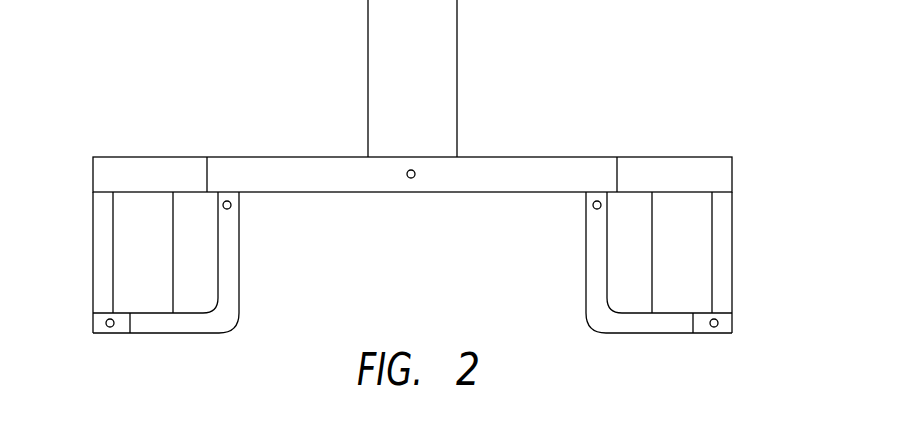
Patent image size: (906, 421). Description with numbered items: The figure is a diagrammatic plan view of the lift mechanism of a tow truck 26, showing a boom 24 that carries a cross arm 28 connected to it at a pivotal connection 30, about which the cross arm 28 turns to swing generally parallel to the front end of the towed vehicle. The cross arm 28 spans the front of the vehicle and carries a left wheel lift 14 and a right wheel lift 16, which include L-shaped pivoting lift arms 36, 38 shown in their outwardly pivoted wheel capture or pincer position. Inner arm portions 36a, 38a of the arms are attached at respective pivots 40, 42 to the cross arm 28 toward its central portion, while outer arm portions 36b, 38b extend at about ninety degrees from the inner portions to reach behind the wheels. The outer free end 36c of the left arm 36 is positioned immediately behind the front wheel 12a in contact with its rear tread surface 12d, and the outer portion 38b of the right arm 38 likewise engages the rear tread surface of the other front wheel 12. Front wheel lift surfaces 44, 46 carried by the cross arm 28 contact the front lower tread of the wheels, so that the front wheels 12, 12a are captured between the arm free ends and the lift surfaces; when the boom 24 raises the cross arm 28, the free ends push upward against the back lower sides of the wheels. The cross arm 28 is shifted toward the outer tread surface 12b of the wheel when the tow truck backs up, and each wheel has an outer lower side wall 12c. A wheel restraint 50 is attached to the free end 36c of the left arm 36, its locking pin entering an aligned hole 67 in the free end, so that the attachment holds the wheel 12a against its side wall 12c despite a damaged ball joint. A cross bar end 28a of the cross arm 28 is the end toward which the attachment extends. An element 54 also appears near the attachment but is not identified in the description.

The front wheel 12 is at (693, 268).
The front wheel 12a is at (157, 271).
The outer tread surface 12b is at (118, 187).
The outer lower side wall 12c is at (112, 212).
The rear tread surface 12d is at (130, 333).
The left wheel lift 14 is at (160, 137).
The right wheel lift 16 is at (663, 140).
The boom 24 is at (448, 47).
The tow truck 26 is at (467, 108).
The cross arm 28 is at (472, 160).
The cross bar end 28a is at (127, 168).
The pivotal connection 30 is at (407, 174).
The pivoting lift arm 36 is at (252, 259).
The inner arm portion 36a is at (242, 230).
The outer arm portion 36b is at (213, 323).
The outer free end 36c is at (94, 324).
The pivoting lift arm 38 is at (585, 263).
The inner arm portion 38a is at (593, 230).
The outer arm portion 38b is at (675, 323).
The pivot 40 is at (228, 201).
The pivot 42 is at (597, 201).
The front wheel lift surface 44 is at (168, 183).
The front wheel lift surface 46 is at (680, 180).
The wheel restraint 50 is at (80, 250).
The flange 54 is at (143, 323).
The hole 67 is at (106, 323).